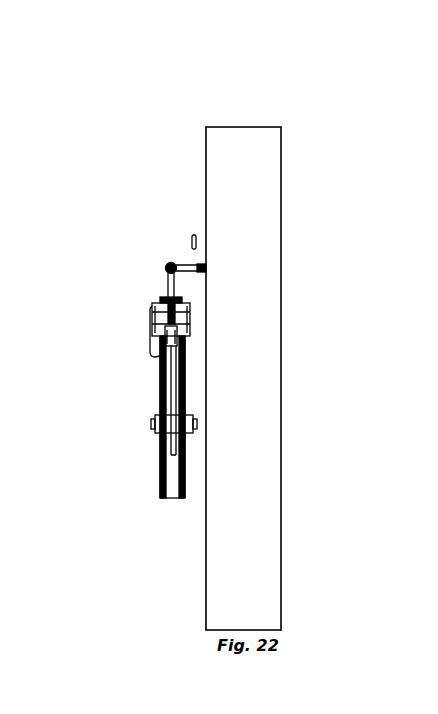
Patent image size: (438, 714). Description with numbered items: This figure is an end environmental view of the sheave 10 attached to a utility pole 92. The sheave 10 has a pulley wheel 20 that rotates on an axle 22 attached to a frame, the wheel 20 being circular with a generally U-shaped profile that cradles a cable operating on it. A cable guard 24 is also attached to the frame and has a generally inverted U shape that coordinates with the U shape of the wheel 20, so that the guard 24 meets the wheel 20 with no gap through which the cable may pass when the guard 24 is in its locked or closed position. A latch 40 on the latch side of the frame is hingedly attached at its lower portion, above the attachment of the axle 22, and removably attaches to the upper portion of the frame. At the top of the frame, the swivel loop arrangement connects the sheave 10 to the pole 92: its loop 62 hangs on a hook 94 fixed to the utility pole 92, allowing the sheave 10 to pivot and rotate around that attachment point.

The sheave 10 is at (130, 562).
The pulley wheel 20 is at (167, 500).
The axle 22 is at (152, 430).
The cable guard 24 is at (162, 348).
The latch 40 is at (150, 323).
The loop 62 is at (162, 273).
The utility pole 92 is at (263, 190).
The hook 94 is at (185, 262).